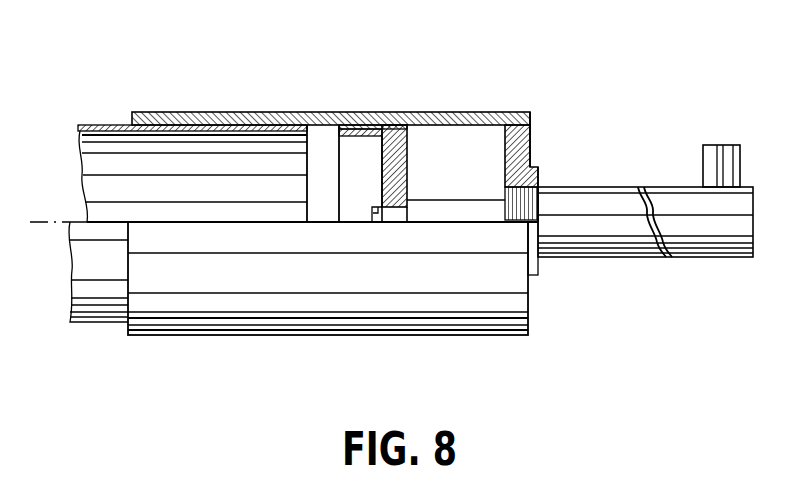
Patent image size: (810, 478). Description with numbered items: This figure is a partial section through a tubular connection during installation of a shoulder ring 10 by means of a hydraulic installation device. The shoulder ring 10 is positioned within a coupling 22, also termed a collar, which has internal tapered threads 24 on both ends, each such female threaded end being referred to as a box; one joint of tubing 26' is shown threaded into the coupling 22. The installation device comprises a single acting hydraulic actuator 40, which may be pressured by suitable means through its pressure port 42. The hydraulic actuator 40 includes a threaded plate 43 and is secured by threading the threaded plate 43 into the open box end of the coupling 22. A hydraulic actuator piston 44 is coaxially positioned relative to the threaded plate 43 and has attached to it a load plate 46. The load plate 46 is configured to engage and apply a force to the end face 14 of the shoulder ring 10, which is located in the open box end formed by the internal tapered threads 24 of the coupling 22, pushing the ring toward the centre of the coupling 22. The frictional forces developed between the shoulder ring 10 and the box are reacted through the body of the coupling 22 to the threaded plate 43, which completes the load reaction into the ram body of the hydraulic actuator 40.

The shoulder ring 10 is at (362, 128).
The opposite end face 14 is at (397, 207).
The coupling 22 is at (250, 110).
The internal tapered threads 24 is at (400, 122).
The joint of tubing 26' is at (192, 84).
The single acting hydraulic actuator 40 is at (587, 187).
The pressure port 42 is at (718, 145).
The threaded plate 43 is at (533, 133).
The hydraulic actuator piston 44 is at (458, 219).
The load plate 46 is at (412, 133).